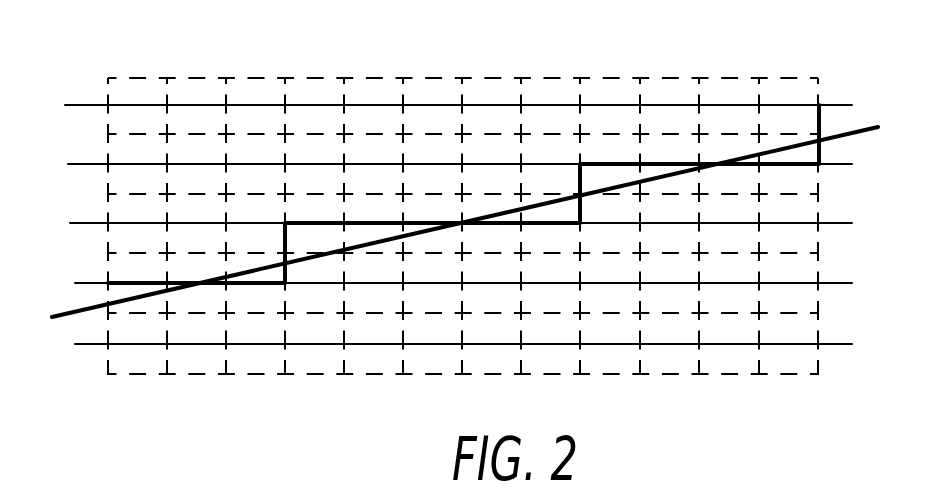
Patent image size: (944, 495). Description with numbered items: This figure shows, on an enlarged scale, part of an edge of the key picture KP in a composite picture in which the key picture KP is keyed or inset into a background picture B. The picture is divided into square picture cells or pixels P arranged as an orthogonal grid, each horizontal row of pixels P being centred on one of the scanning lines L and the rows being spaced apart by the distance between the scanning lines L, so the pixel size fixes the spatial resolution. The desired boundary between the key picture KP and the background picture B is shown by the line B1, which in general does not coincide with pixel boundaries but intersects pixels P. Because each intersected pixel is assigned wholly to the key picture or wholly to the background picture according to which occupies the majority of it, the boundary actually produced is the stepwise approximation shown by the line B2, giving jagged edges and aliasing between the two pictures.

The pixels P is at (193, 92).
The scanning lines L is at (82, 106).
The background picture B is at (332, 150).
The key picture KP is at (573, 330).
The desired boundary B1 is at (677, 173).
The stepwise approximation B2 is at (673, 163).